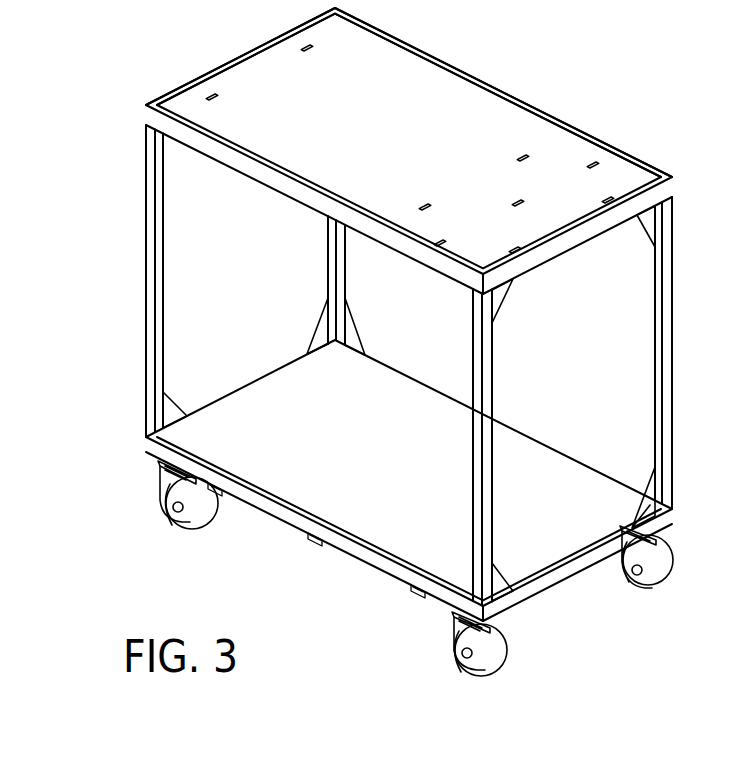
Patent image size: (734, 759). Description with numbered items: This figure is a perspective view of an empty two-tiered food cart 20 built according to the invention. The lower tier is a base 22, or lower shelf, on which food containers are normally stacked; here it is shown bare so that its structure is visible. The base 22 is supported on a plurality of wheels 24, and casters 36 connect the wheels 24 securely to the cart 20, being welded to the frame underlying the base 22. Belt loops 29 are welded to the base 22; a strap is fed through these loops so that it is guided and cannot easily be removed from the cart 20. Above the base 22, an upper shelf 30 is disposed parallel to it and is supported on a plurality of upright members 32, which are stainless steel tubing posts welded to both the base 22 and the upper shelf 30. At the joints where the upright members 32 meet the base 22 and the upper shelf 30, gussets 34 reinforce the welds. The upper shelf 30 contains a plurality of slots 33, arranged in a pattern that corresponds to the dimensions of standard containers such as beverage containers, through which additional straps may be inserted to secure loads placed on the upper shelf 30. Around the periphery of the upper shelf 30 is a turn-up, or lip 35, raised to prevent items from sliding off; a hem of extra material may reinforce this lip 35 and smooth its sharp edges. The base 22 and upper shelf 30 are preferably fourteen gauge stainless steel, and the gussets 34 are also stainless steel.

The two-tiered food cart 20 is at (122, 228).
The base 22 is at (297, 497).
The wheels 24 is at (172, 517).
The belt loops 29 is at (315, 550).
The upper shelf 30 is at (485, 104).
The upright members 32 is at (163, 226).
The slots 33 is at (302, 48).
The gussets 34 is at (172, 405).
The lip 35 is at (183, 93).
The casters 36 is at (172, 481).